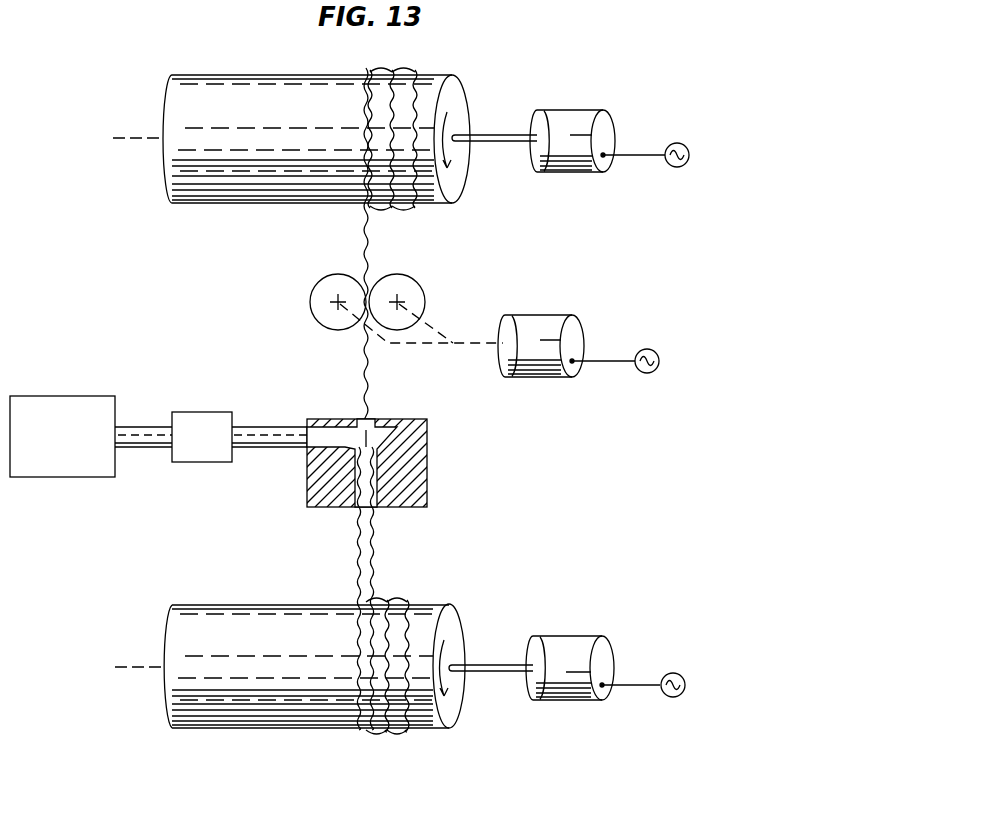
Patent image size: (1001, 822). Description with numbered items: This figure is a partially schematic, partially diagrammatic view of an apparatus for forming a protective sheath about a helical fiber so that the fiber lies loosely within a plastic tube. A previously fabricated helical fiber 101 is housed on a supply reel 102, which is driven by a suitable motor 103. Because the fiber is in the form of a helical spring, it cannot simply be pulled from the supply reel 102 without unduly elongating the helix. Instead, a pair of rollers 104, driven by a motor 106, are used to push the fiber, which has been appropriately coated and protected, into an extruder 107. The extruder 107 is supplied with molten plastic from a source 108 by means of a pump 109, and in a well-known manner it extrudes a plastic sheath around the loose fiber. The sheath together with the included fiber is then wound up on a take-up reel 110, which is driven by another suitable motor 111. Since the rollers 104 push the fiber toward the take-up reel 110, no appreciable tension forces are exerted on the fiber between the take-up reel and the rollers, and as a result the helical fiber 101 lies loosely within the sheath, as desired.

The helical fiber 101 is at (364, 228).
The supply reel 102 is at (468, 183).
The motor 103 is at (577, 172).
The rollers 104 is at (416, 283).
The motor 106 is at (540, 370).
The extruder 107 is at (413, 419).
The source 108 is at (68, 477).
The pump 109 is at (208, 462).
The take-up reel 110 is at (182, 632).
The motor 111 is at (563, 640).